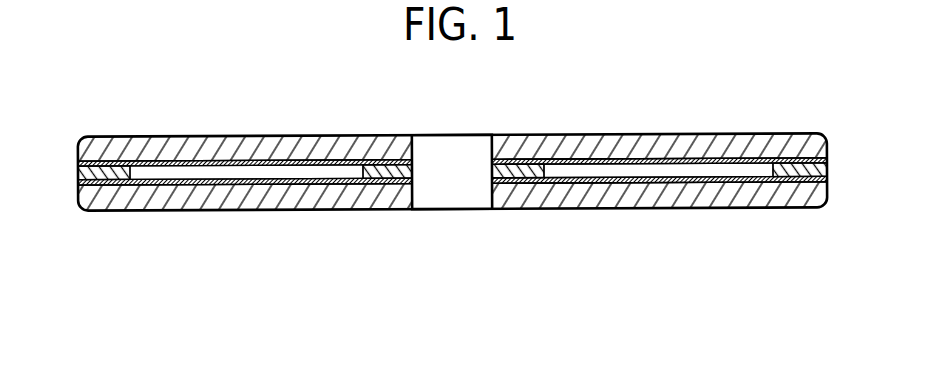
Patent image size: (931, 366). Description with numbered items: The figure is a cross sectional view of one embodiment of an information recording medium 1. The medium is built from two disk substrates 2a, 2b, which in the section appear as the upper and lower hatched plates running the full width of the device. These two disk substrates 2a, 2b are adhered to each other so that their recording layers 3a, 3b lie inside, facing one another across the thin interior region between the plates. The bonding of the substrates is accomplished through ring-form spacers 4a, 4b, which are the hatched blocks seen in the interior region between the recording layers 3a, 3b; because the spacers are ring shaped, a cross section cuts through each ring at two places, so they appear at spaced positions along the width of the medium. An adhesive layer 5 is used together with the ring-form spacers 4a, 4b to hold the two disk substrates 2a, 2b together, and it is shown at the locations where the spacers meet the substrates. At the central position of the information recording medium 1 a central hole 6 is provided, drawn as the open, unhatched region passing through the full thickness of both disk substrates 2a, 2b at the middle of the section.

The information recording medium 1 is at (201, 128).
The disk substrate 2a is at (316, 150).
The disk substrate 2b is at (233, 202).
The recording layer 3a is at (651, 157).
The recording layer 3b is at (720, 177).
The ring-form spacer 4a is at (80, 172).
The ring-form spacer 4b is at (387, 174).
The adhesive layer 5 is at (527, 163).
The central hole 6 is at (469, 148).